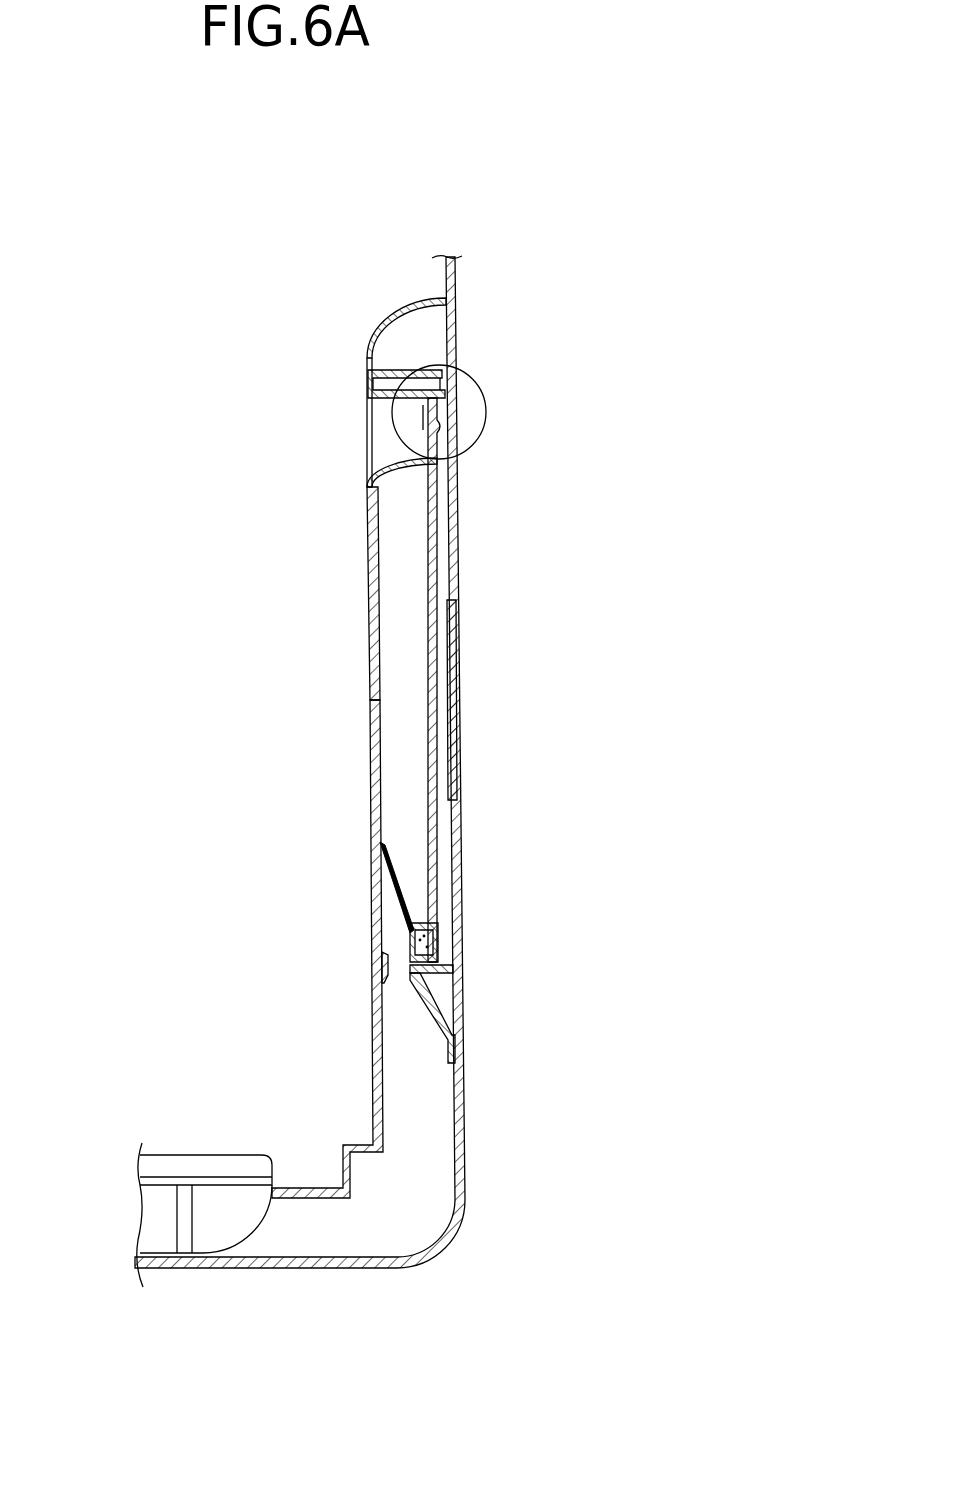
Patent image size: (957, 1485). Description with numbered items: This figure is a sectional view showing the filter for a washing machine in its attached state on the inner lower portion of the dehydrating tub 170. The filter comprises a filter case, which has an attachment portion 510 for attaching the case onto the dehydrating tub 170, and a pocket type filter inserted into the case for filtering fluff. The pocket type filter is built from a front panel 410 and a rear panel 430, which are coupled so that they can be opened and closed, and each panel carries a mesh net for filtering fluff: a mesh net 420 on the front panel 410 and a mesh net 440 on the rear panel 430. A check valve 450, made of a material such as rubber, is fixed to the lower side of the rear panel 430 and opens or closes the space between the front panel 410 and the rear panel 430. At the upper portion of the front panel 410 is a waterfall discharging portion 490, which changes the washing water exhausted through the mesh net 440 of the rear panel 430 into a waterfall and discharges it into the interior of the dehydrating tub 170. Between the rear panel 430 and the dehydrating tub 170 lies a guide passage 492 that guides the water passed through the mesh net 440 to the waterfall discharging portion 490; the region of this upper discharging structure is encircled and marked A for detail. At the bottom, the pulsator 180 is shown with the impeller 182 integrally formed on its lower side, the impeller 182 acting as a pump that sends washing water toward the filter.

The dehydrating tub 170 is at (458, 836).
The guide passage 492 is at (447, 699).
The front panel 410 is at (367, 555).
The mesh net 420 is at (372, 748).
The rear panel 430 is at (417, 462).
The mesh net 440 is at (435, 613).
The detail region A is at (472, 381).
The waterfall discharging portion 490 is at (424, 413).
The check valve 450 is at (373, 898).
The attachment portion 510 is at (373, 1078).
The pulsator 180 is at (183, 1168).
The impeller 182 is at (188, 1237).